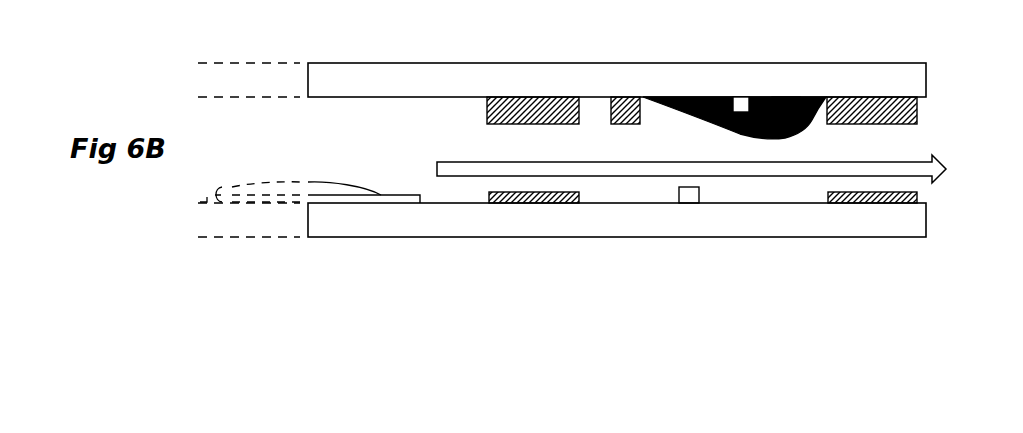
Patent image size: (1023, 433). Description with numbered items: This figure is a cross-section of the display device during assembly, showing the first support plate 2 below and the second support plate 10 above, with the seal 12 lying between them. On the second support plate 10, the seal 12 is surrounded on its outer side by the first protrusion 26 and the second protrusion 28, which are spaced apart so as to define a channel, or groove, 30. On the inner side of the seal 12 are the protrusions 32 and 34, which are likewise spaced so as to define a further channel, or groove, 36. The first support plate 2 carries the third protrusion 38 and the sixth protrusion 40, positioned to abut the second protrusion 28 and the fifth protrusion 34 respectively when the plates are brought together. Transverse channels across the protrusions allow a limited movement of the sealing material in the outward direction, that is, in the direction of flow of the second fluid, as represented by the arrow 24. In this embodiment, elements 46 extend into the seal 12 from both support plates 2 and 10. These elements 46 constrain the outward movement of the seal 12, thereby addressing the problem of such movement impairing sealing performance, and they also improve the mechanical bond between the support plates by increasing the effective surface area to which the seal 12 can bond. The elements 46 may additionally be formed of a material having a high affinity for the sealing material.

The first support plate 2 is at (926, 220).
The second support plate 10 is at (926, 78).
The seal 12 is at (697, 96).
The arrow 24 is at (948, 170).
The first protrusion 26 is at (783, 96).
The second protrusion 28 is at (877, 96).
The channel 30 is at (810, 96).
The protrusion 32 is at (623, 96).
The fifth protrusion 34 is at (533, 96).
The channel 36 is at (595, 96).
The third protrusion 38 is at (877, 204).
The sixth protrusion 40 is at (538, 204).
The elements 46 is at (739, 96).